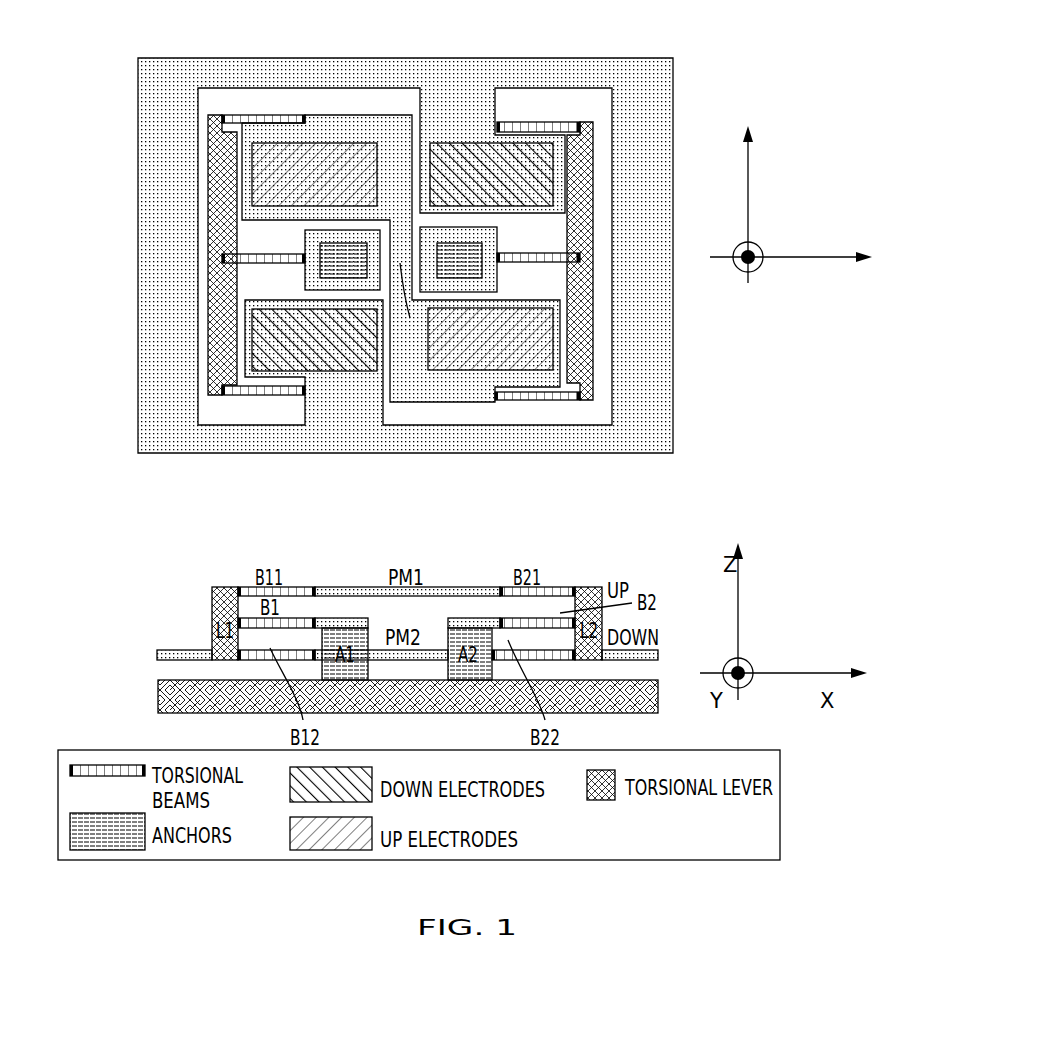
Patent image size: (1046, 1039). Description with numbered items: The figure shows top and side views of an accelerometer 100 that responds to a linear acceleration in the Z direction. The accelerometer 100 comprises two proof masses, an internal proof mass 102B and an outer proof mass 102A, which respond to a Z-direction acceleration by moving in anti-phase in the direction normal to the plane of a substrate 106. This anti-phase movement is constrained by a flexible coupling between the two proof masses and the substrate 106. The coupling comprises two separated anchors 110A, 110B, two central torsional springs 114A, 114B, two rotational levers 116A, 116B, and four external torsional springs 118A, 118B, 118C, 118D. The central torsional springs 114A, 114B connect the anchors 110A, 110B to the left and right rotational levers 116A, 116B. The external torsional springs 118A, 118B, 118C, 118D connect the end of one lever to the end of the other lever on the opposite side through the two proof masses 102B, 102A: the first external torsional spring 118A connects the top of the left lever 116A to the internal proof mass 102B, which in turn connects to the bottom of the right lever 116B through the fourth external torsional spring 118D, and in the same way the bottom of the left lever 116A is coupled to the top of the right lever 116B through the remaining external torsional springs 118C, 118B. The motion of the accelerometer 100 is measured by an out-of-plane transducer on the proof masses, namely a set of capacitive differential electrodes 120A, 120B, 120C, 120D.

The accelerometer 100 is at (797, 88).
The proof mass PM2 102A is at (152, 262).
The proof mass PM1 102B is at (396, 113).
The substrate 106 is at (165, 695).
The anchor A1 110A is at (312, 270).
The anchor A2 110B is at (495, 270).
The central torsional spring B1 114A is at (222, 258).
The central torsional spring B2 114B is at (570, 258).
The rotational lever L1 116A is at (210, 318).
The rotational lever L2 116B is at (583, 318).
The external torsional spring B11 118A is at (242, 93).
The external torsional spring B21 118B is at (503, 125).
The external torsional spring B12 118C is at (213, 420).
The external torsional spring B22 118D is at (583, 415).
The capacitive differential electrode 120A is at (257, 163).
The capacitive differential electrode 120B is at (545, 183).
The capacitive differential electrode 120C is at (300, 370).
The capacitive differential electrode 120D is at (545, 358).